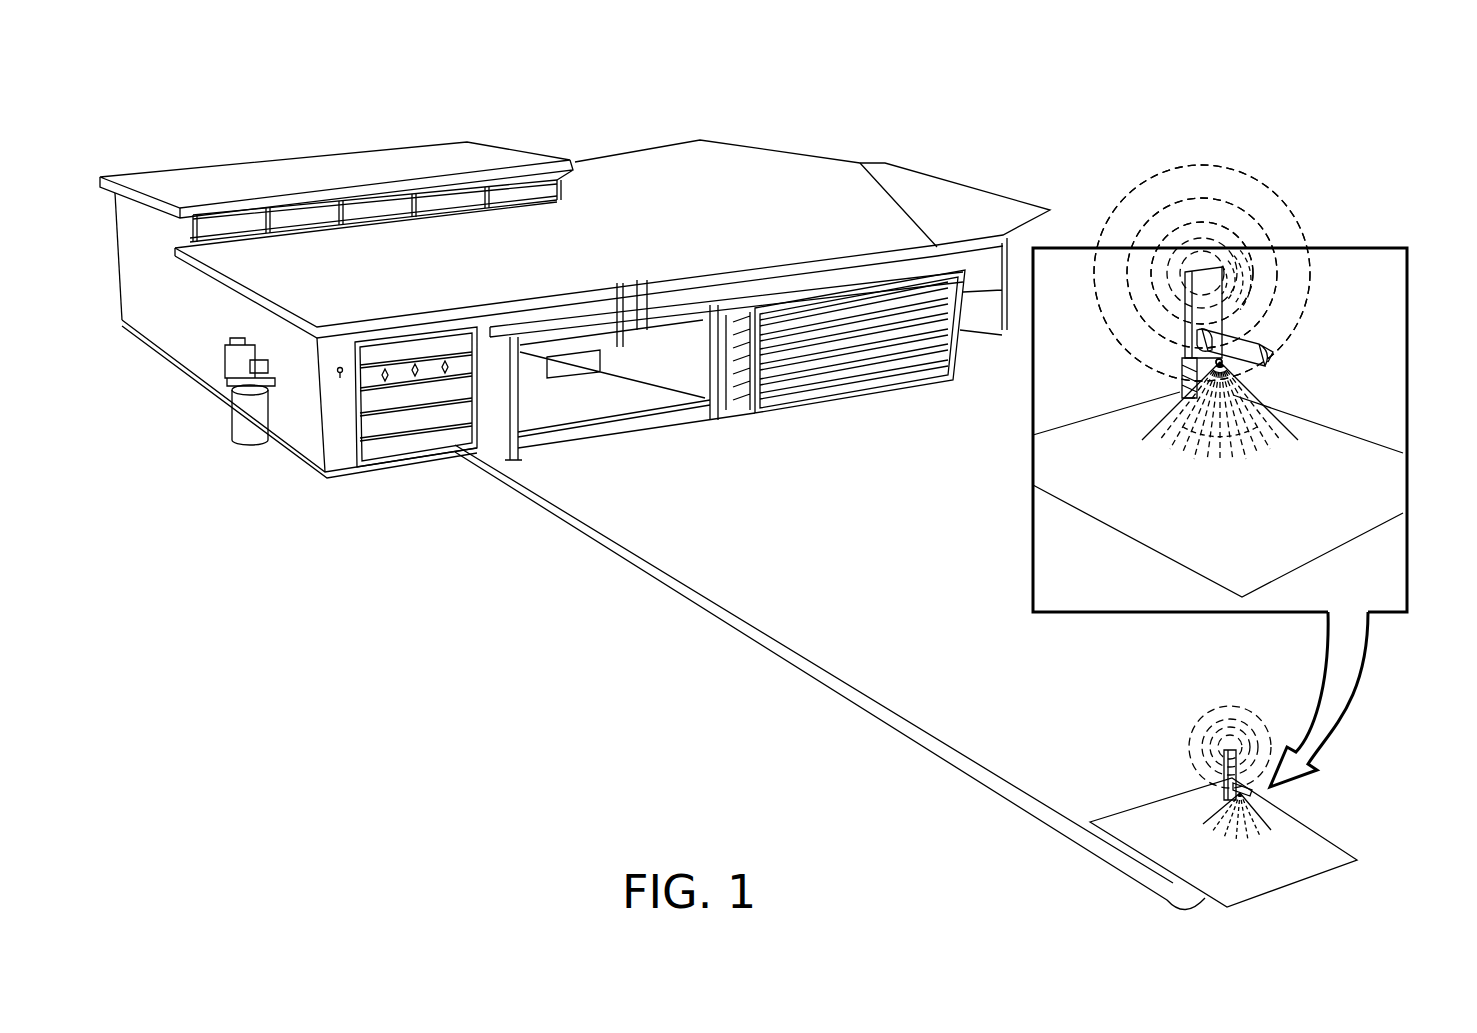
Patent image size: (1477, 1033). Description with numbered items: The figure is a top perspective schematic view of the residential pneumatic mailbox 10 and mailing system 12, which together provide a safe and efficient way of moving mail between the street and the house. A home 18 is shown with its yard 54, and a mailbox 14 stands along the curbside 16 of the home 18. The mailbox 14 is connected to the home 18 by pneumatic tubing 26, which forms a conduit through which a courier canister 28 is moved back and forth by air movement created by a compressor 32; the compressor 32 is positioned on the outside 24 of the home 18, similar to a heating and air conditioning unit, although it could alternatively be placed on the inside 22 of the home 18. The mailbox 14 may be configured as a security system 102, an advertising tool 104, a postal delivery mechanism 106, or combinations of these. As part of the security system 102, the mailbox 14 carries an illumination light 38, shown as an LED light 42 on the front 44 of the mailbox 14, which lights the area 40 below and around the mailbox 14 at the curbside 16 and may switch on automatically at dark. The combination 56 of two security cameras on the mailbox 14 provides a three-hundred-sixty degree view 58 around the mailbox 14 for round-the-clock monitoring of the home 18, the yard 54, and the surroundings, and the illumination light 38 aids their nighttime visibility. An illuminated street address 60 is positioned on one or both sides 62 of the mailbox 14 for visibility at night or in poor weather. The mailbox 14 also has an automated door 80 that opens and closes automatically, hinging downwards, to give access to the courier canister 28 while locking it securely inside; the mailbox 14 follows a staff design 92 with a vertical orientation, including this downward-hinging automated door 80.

The residential pneumatic mailbox 10 is at (1162, 150).
The mailing system 12 is at (638, 92).
The mailbox 14 is at (1297, 290).
The curbside 16 is at (1390, 777).
The home 18 is at (187, 143).
The inside 22 is at (563, 390).
The outside 24 is at (185, 350).
The pneumatic tubing 26 is at (760, 637).
The courier canister 28 is at (1233, 332).
The compressor 32 is at (237, 423).
The illumination light 38 is at (1222, 366).
The area 40 is at (1157, 418).
The LED light 42 is at (1219, 362).
The front 44 is at (1203, 360).
The yard 54 is at (946, 566).
The combination 56 is at (1223, 177).
The 360 degree view 58 is at (1277, 193).
The illuminated street address 60 is at (1173, 375).
The sides 62 is at (1180, 388).
The automated door 80 is at (1253, 350).
The staff design 92 is at (1278, 280).
The security system 102 is at (1105, 213).
The advertising tool 104 is at (1202, 273).
The postal delivery mechanism 106 is at (1202, 273).